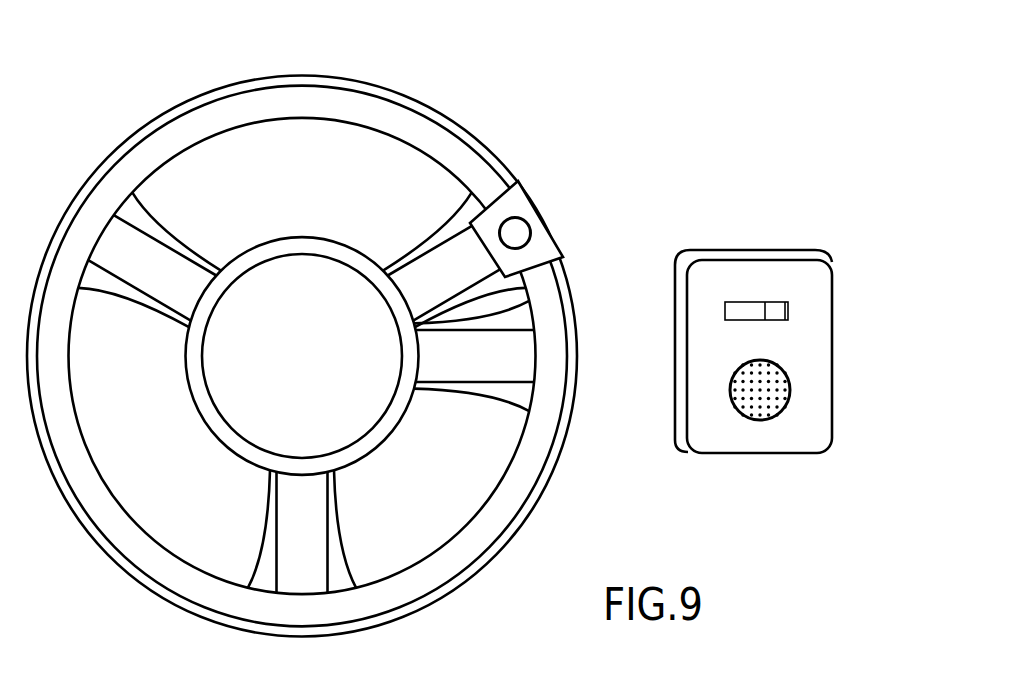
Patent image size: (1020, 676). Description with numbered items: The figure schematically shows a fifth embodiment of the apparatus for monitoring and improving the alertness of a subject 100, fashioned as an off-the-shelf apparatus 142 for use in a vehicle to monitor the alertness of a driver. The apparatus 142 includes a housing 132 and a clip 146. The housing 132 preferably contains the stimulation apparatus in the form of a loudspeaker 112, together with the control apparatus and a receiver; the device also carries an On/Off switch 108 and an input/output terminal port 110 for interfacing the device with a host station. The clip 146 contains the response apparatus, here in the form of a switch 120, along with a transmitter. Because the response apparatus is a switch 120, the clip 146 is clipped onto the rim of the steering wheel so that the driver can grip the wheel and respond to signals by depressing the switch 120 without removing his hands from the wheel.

The apparatus 142 is at (560, 107).
The apparatus for monitoring and improving the alertness of a subject 100 is at (732, 272).
The clip 146 is at (547, 233).
The switch 120 is at (513, 228).
The housing 132 is at (768, 351).
The On/Off switch 108 is at (747, 308).
The loudspeaker 112 is at (730, 390).
The input/output terminal port 110 is at (753, 457).